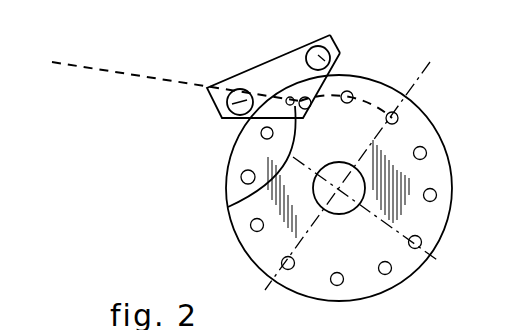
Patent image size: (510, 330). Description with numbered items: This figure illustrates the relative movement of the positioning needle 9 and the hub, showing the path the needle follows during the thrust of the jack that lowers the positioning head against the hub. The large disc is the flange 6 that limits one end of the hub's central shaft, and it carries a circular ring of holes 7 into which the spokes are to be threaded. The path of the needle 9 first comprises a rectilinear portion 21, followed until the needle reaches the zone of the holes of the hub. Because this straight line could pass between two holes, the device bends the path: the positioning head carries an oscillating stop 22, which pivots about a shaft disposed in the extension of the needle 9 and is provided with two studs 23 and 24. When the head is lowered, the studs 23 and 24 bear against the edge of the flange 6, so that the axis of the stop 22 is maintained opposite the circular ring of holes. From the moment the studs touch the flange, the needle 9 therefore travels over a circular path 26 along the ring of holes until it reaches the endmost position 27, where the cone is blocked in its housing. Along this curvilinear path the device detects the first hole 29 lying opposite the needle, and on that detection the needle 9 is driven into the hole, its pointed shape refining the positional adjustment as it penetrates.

The flange 6 is at (436, 136).
The holes 7 is at (241, 176).
The positioning needle 9 is at (280, 76).
The rectilinear portion 21 is at (120, 75).
The oscillating stop 22 is at (287, 47).
The stud 23 is at (213, 112).
The stud 24 is at (352, 50).
The circular path 26 is at (374, 100).
The endmost position 27 is at (398, 108).
The first hole 29 is at (273, 187).